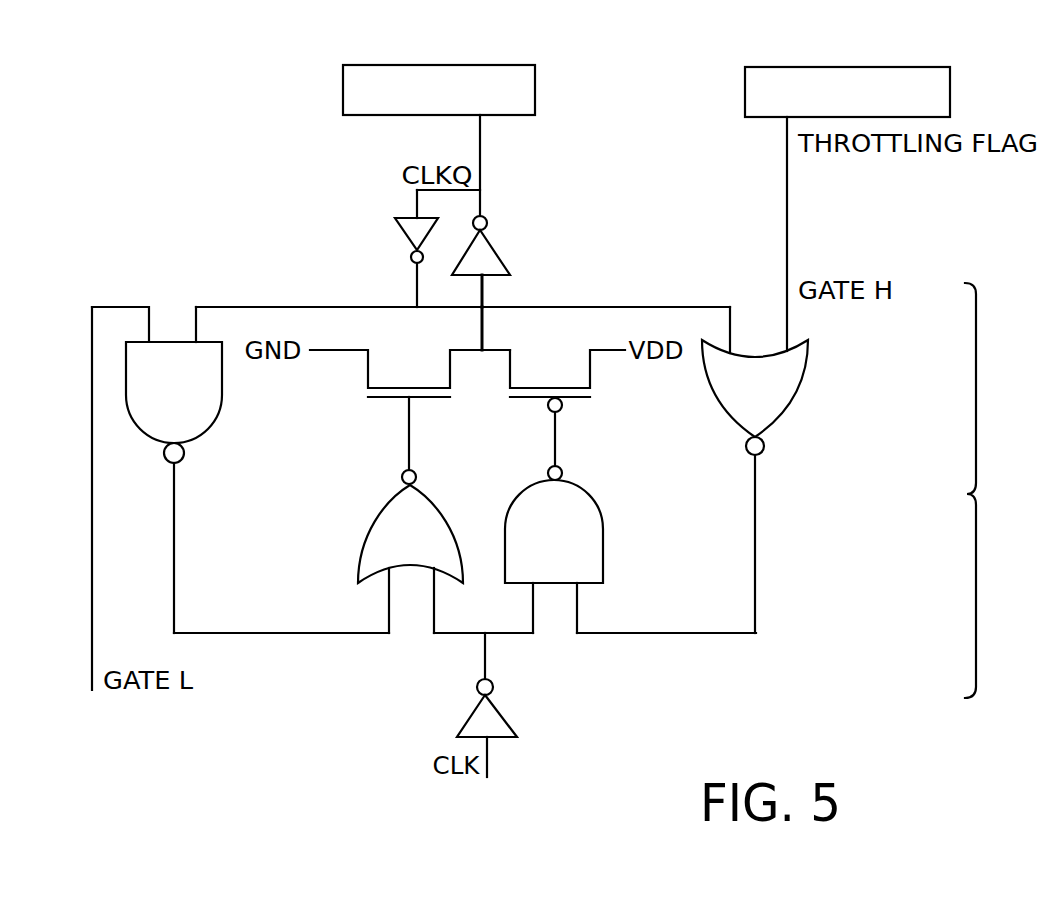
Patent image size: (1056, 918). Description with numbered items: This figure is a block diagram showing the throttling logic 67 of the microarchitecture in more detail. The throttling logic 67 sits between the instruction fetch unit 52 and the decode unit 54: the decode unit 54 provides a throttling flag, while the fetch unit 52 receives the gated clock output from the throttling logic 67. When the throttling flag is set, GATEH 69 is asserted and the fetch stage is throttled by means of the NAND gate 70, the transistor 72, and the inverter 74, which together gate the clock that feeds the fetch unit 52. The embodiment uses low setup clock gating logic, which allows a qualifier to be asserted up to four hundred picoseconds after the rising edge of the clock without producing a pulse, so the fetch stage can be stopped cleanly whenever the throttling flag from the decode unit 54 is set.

The instruction fetch unit 52 is at (535, 88).
The decode unit 54 is at (800, 66).
The throttling logic 67 is at (1000, 490).
The GATEH 69 is at (790, 316).
The NAND gate 70 is at (603, 545).
The transistor 72 is at (592, 381).
The inverter 74 is at (503, 258).